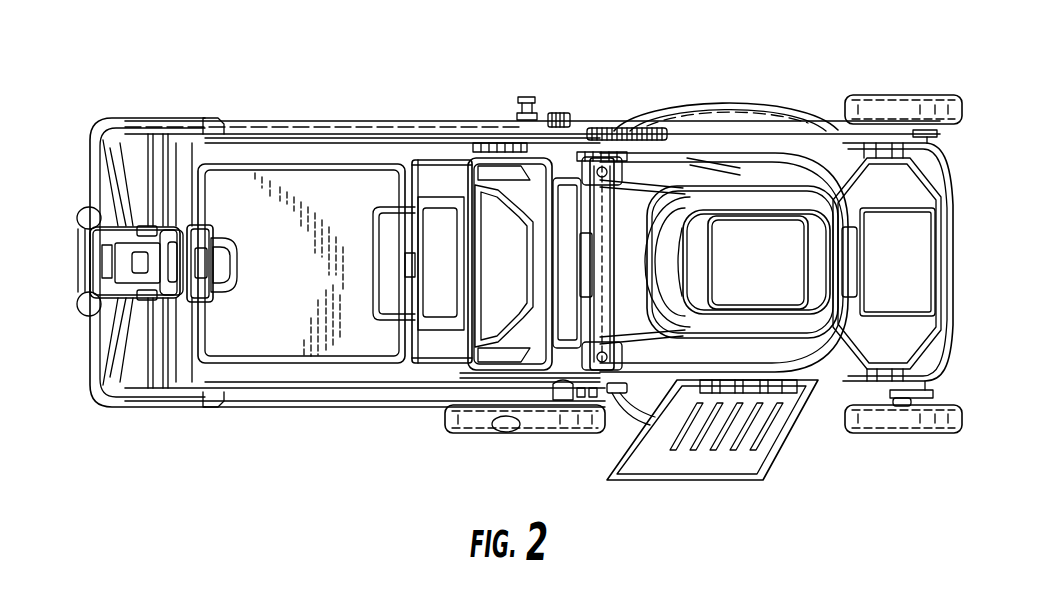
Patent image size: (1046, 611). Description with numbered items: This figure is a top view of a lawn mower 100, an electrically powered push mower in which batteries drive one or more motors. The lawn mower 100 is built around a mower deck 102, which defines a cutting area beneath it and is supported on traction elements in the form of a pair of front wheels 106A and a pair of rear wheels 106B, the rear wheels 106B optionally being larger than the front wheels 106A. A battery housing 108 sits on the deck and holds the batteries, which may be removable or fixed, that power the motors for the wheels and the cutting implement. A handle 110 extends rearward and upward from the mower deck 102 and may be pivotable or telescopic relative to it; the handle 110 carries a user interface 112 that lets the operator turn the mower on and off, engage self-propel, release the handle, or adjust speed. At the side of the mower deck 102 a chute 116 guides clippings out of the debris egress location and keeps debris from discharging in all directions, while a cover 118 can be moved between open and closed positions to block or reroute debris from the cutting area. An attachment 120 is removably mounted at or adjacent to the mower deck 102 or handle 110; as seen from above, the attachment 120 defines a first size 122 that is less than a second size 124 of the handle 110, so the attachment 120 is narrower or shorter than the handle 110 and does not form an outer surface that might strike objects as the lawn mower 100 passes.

The lawn mower 100 is at (603, 62).
The mower deck 102 is at (735, 106).
The front wheels 106A is at (893, 436).
The rear wheels 106B is at (503, 437).
The battery housing 108 is at (766, 236).
The handle 110 is at (330, 124).
The user interface 112 is at (86, 318).
The chute 116 is at (697, 458).
The cover 118 is at (443, 200).
The attachment 120 is at (276, 342).
The first size 122 is at (215, 167).
The second size 124 is at (270, 133).